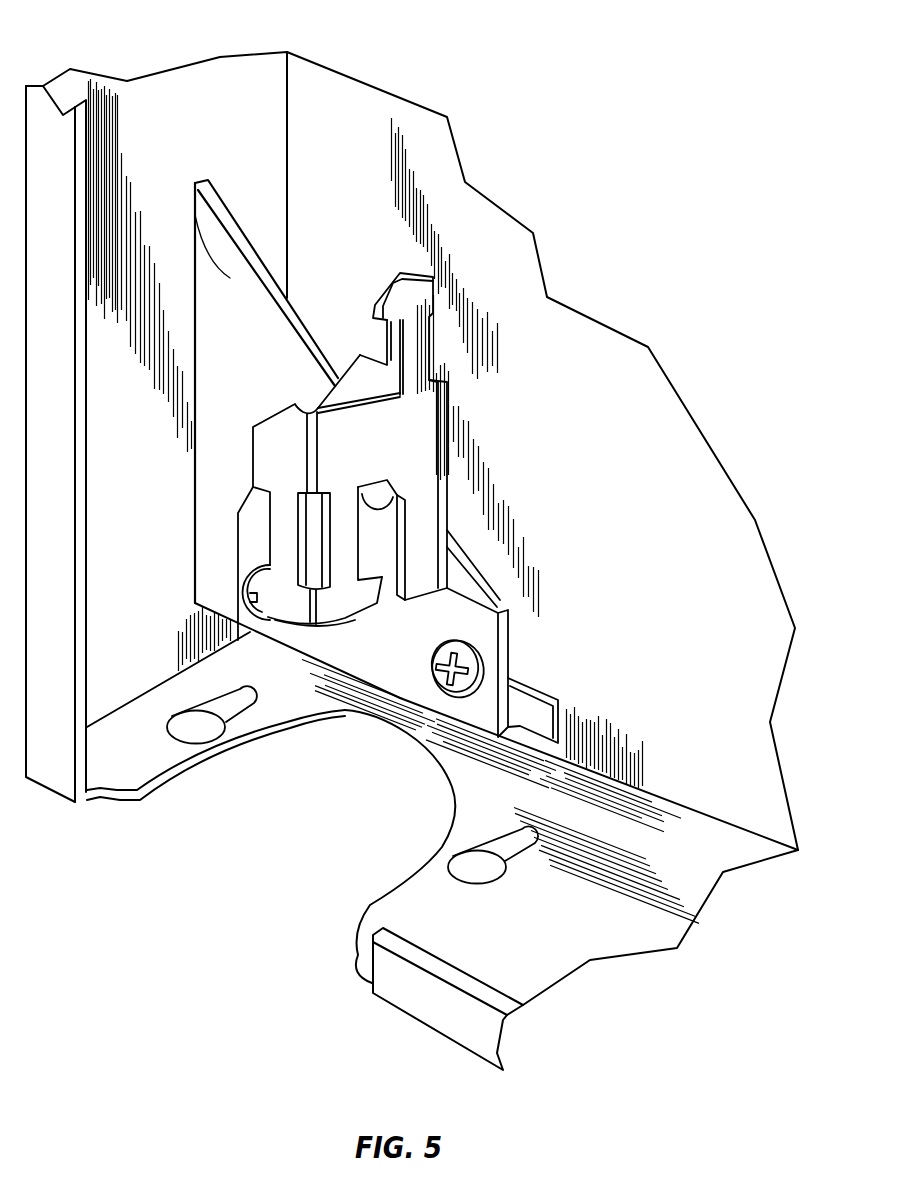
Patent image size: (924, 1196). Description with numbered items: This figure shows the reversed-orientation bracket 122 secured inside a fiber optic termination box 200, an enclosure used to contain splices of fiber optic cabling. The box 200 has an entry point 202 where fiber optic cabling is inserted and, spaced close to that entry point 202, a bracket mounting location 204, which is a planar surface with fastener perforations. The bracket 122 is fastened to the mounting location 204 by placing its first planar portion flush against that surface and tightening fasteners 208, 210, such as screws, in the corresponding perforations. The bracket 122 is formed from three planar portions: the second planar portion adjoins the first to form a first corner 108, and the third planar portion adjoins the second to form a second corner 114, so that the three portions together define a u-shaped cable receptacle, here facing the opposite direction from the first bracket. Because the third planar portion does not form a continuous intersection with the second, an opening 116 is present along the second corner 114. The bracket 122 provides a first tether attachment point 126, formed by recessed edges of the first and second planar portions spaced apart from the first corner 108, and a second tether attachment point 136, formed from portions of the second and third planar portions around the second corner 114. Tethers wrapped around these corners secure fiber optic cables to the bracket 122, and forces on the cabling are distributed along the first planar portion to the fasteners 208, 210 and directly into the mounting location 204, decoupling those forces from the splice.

The fiber optic termination box 200 is at (672, 521).
The bracket mounting location 204 is at (195, 213).
The bracket 122 is at (397, 490).
The first tether attachment point 126 is at (458, 345).
The first corner 108 is at (447, 432).
The second corner 114 is at (307, 450).
The second tether attachment point 136 is at (260, 534).
The opening 116 is at (330, 550).
The fastener 208 is at (398, 494).
The fastener 210 is at (470, 657).
The entry point 202 is at (293, 850).